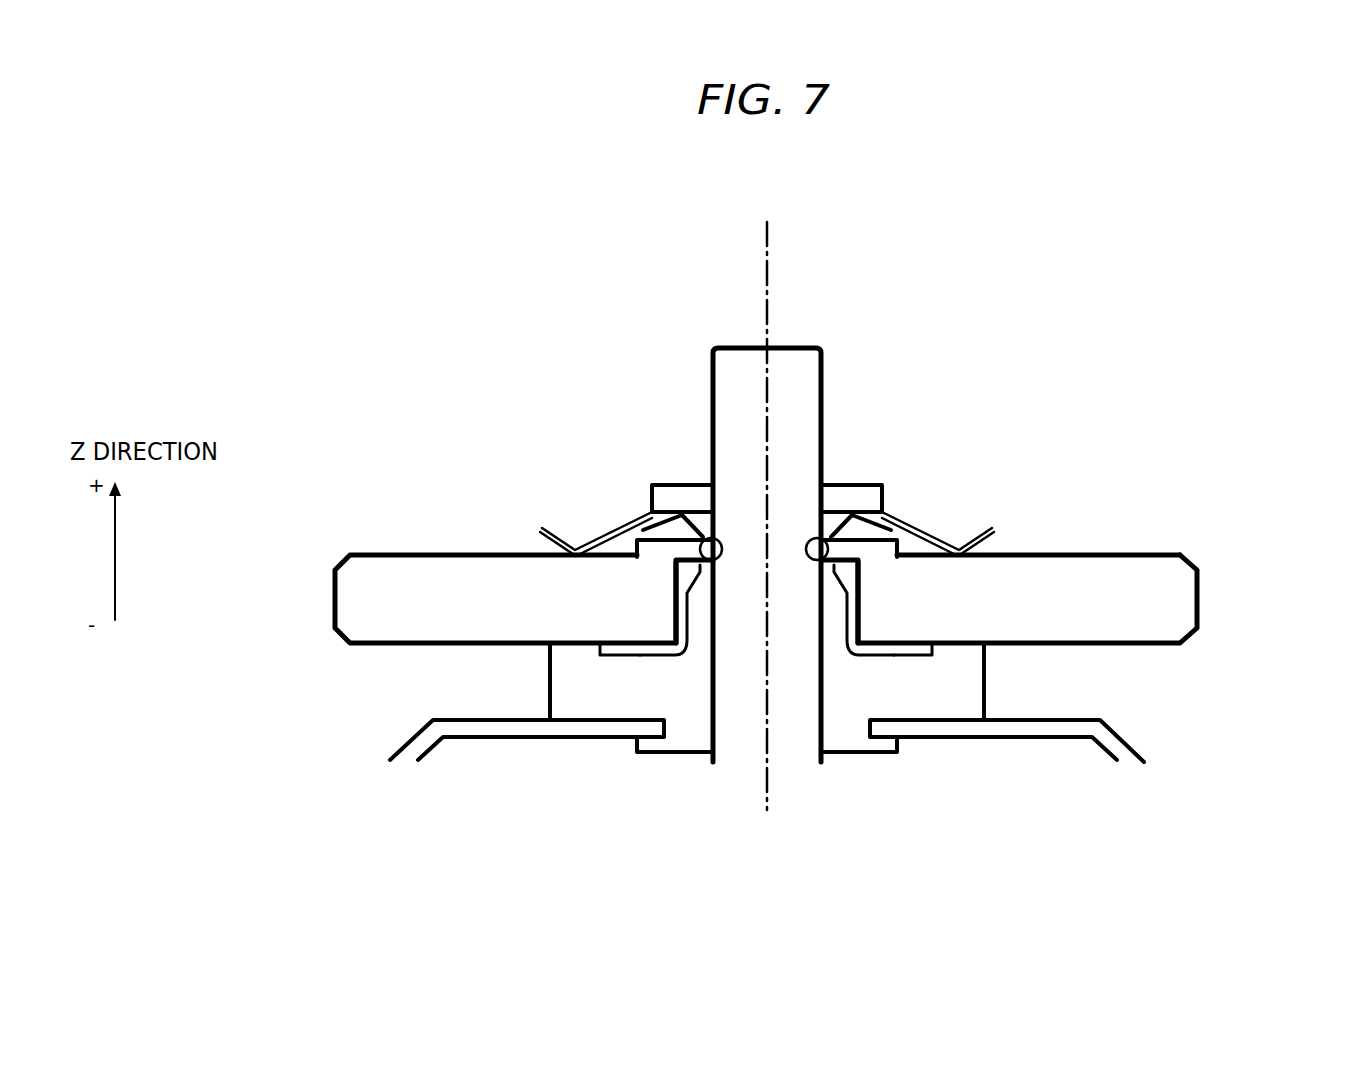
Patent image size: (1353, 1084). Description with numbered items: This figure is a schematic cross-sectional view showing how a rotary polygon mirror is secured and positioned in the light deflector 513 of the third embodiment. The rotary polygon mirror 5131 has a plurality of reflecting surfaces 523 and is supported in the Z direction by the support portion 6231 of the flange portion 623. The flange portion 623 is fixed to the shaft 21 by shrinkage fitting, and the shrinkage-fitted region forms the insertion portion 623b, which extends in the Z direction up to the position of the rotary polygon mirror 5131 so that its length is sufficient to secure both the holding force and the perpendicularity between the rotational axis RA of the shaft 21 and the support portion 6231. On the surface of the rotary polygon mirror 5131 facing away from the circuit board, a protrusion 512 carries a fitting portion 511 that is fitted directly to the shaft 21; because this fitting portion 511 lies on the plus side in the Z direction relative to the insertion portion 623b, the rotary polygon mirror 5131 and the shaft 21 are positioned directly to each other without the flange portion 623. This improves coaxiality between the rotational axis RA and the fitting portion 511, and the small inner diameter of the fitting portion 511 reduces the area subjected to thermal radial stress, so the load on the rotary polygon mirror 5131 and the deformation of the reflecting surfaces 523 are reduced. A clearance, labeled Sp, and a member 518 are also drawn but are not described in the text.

The shaft 21 is at (733, 348).
The fitting portion 511 is at (722, 537).
The protrusion 512 is at (650, 555).
The light deflector 513 is at (925, 240).
The rotary polygon mirror 5131 is at (1110, 575).
The holding member 518 is at (573, 642).
The reflecting surfaces 523 is at (765, 521).
The flange portion 623 is at (917, 685).
The insertion portion 623b is at (700, 617).
The support portion 6231 is at (592, 656).
The space Sp is at (685, 570).
The rotational axis RA is at (768, 240).